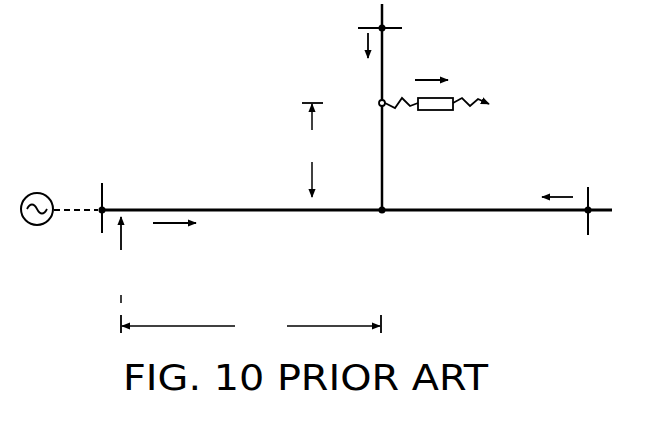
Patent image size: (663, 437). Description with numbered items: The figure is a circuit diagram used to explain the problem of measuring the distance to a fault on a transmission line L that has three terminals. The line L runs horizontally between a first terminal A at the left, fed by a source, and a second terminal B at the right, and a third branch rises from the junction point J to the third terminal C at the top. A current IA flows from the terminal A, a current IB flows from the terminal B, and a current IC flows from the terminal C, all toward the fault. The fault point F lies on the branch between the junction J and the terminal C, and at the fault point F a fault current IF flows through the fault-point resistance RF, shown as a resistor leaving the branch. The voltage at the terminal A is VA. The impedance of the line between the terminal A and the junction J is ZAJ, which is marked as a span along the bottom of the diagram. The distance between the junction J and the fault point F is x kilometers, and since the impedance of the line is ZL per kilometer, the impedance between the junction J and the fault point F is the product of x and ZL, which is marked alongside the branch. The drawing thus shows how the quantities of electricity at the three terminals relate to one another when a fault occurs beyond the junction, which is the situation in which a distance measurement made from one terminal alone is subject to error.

The terminal A is at (104, 208).
The terminal B is at (586, 213).
The third terminal C is at (385, 26).
The fault point F is at (369, 104).
The junction point J is at (382, 214).
The transmission line L is at (473, 212).
The fault-point resistance RF is at (437, 123).
The current IA is at (174, 241).
The current IB is at (557, 181).
The current IC is at (352, 51).
The fault current IF is at (431, 65).
The voltage VA is at (119, 260).
The line impedance per kilometer ZL is at (309, 150).
The impedance ZAJ is at (251, 329).